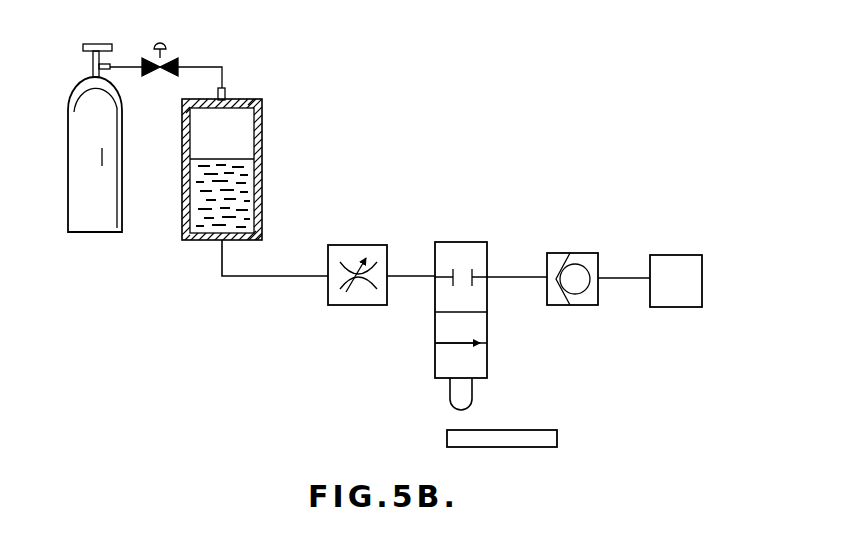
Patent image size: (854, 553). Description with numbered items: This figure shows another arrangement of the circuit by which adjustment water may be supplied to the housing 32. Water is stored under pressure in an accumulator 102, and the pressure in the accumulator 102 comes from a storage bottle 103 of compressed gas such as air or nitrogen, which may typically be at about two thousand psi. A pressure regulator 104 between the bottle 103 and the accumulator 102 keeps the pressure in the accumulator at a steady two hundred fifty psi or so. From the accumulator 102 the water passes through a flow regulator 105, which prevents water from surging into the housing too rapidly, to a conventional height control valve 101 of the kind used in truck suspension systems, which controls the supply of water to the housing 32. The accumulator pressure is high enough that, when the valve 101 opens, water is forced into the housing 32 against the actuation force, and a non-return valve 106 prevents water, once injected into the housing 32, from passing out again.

The housing 32 is at (677, 255).
The height control valve 101 is at (470, 240).
The accumulator 102 is at (250, 147).
The storage bottle 103 is at (98, 220).
The pressure regulator 104 is at (178, 63).
The flow regulator 105 is at (353, 305).
The non-return valve 106 is at (567, 253).